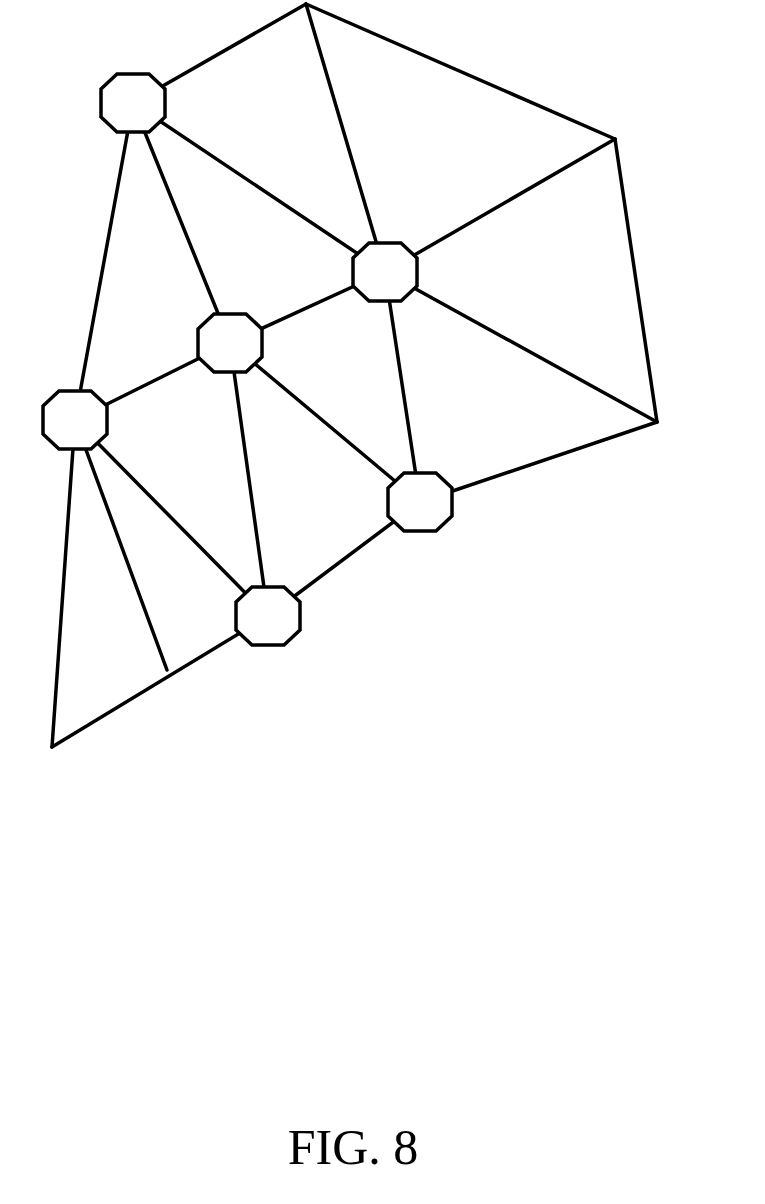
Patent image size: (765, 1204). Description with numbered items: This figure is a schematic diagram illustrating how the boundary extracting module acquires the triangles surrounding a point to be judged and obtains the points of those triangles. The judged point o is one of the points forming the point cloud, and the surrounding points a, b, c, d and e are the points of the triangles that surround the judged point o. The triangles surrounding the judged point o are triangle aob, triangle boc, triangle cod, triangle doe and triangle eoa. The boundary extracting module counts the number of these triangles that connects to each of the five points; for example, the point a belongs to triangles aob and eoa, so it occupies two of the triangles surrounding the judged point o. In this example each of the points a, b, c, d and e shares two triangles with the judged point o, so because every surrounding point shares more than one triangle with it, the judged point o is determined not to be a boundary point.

The point a is at (133, 103).
The point b is at (75, 420).
The point c is at (268, 616).
The point d is at (420, 502).
The point e is at (385, 272).
The judged point o is at (230, 343).